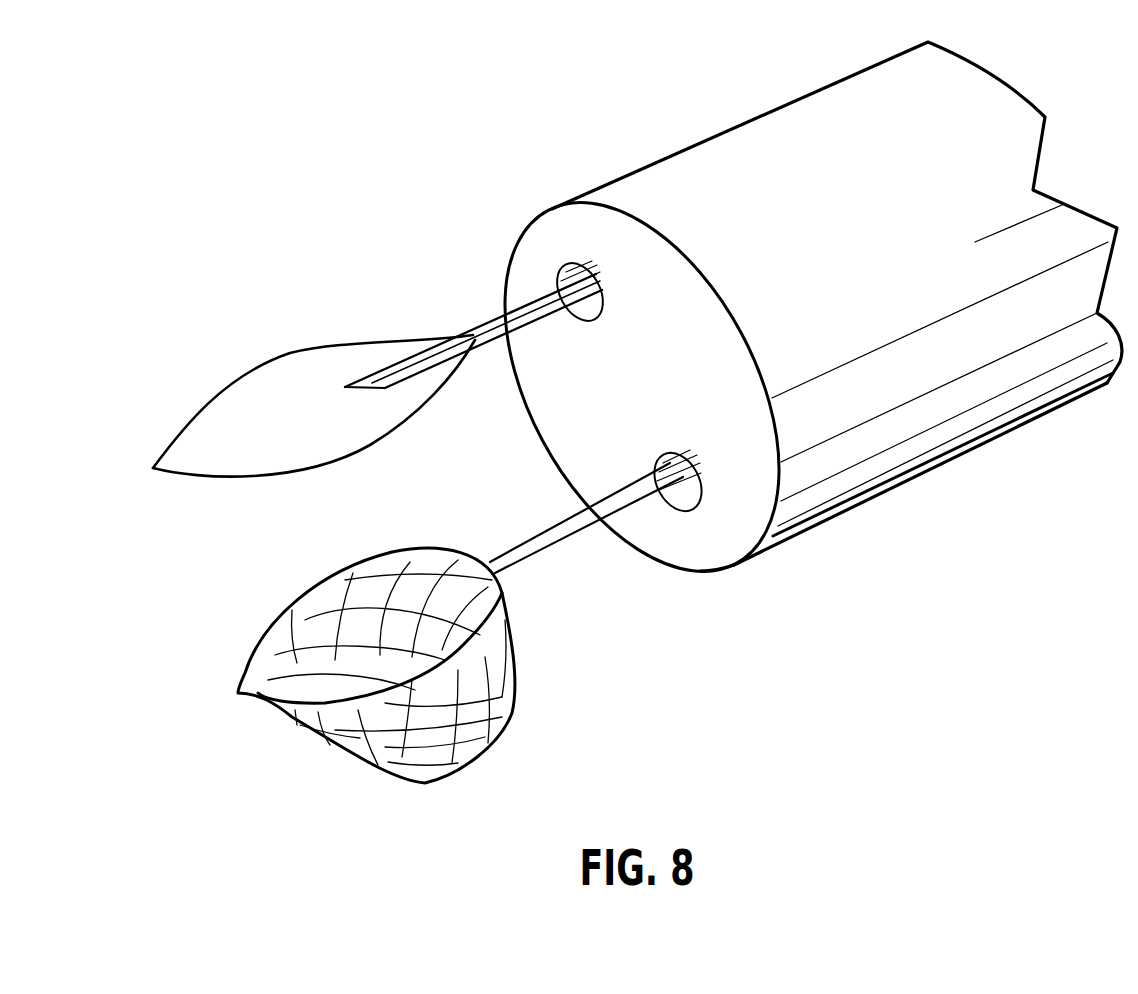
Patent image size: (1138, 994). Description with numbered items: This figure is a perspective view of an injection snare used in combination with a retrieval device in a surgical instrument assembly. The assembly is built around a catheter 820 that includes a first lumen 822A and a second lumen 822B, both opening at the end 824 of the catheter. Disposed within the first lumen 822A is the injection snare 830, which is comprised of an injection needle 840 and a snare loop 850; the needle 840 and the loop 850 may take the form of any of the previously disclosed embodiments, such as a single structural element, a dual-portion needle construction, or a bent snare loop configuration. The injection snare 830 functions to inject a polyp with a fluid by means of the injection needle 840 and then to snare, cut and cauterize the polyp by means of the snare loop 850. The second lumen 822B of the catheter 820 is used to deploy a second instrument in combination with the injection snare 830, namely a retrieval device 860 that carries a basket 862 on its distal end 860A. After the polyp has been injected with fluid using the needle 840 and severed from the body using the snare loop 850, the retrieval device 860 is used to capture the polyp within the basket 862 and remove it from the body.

The catheter 820 is at (697, 142).
The first lumen 822A is at (595, 322).
The second lumen 822B is at (688, 512).
The distal end face of handle body 824 is at (747, 565).
The injection snare 830 is at (277, 327).
The injection needle 840 is at (412, 373).
The snare loop 850 is at (360, 346).
The retrieval device 860 is at (428, 623).
The distal end 860A is at (487, 557).
The basket 862 is at (268, 621).